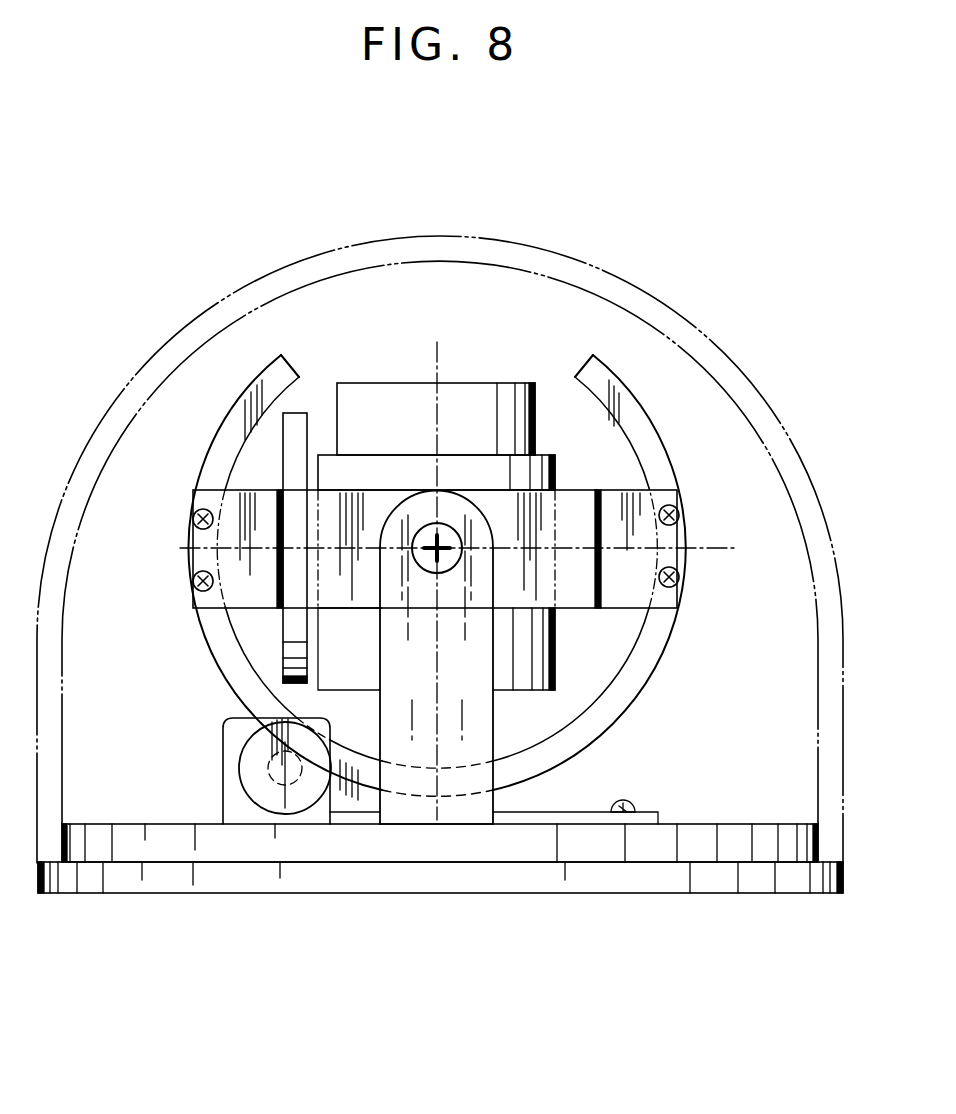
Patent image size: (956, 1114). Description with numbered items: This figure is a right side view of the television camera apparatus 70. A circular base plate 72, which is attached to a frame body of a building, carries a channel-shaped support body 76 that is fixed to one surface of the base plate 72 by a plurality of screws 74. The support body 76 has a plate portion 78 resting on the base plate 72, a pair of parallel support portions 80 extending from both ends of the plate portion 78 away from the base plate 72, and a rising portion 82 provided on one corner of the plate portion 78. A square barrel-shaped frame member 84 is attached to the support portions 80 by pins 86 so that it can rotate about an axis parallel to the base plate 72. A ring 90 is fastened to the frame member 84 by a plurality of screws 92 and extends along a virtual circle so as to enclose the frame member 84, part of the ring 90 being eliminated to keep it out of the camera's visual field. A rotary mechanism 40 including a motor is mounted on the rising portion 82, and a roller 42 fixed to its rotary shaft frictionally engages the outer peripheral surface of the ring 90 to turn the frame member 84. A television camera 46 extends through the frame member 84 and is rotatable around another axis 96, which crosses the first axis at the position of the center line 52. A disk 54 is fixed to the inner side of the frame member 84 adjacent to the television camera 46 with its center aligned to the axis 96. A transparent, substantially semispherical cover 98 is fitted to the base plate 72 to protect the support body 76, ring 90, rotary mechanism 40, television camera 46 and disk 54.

The television camera apparatus 70 is at (641, 267).
The cover 98 is at (698, 337).
The base plate 72 is at (667, 885).
The plate portion 78 is at (580, 818).
The screws 74 is at (627, 804).
The ring 90 is at (228, 432).
The axis 96 is at (222, 548).
The frame member 84 is at (578, 506).
The television camera 46 is at (390, 398).
The center line 52 is at (440, 365).
The disk 54 is at (297, 412).
The support portions 80 is at (485, 712).
The pins 86 is at (437, 538).
The screws 92 is at (679, 515).
The rising portion 82 is at (233, 738).
The rotary mechanism 40 is at (256, 790).
The roller 42 is at (266, 771).
The support body 76 is at (493, 824).